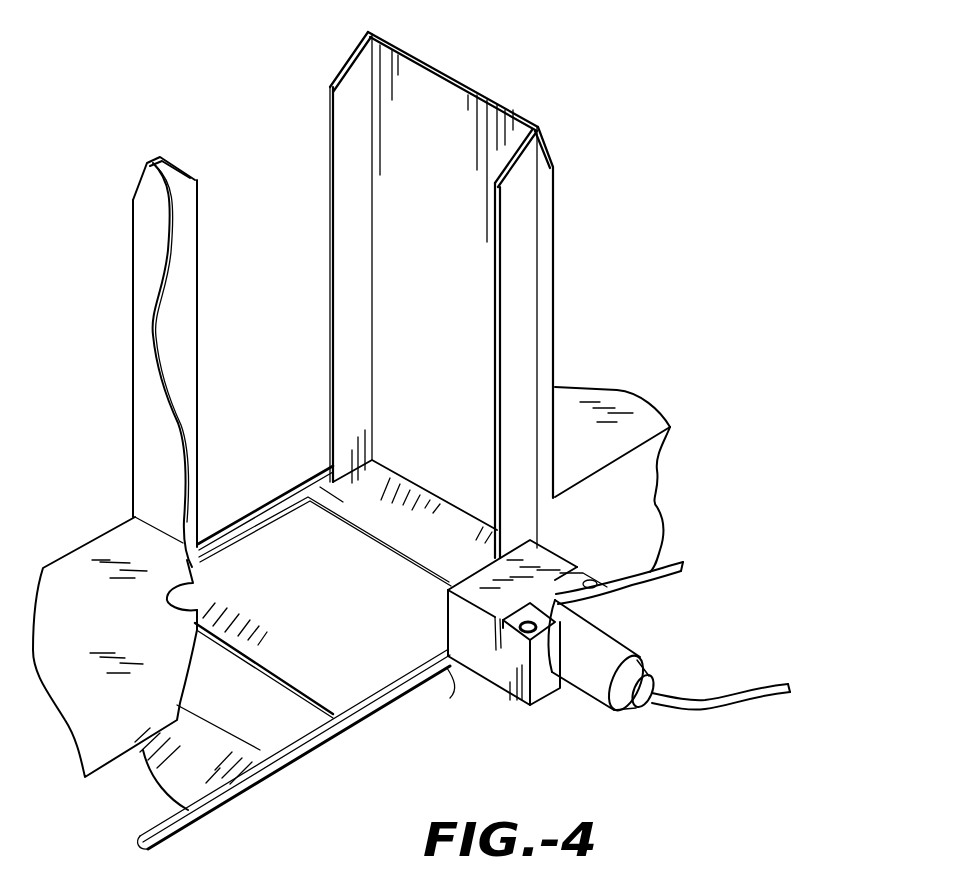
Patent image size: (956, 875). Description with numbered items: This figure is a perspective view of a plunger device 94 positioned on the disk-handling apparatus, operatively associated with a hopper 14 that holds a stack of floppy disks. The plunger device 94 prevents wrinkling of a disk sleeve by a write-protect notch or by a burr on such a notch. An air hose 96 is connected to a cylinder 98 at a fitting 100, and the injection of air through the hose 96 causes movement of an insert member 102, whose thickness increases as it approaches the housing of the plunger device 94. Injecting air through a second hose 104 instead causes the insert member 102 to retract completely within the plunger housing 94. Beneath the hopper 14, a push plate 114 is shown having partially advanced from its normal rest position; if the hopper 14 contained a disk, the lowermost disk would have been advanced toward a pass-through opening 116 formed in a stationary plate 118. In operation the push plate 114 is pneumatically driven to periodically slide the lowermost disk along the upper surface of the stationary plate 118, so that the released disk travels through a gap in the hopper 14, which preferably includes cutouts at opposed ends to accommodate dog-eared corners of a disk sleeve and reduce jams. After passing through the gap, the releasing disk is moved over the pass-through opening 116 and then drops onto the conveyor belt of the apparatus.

The hopper 14 is at (343, 127).
The plunger device 94 is at (720, 625).
The air hose 96 is at (703, 703).
The cylinder 98 is at (597, 683).
The fitting 100 is at (650, 673).
The insert member 102 is at (447, 680).
The second hose 104 is at (673, 577).
The push plate 114 is at (315, 487).
The pass-through opening 116 is at (285, 720).
The stationary plate 118 is at (377, 665).